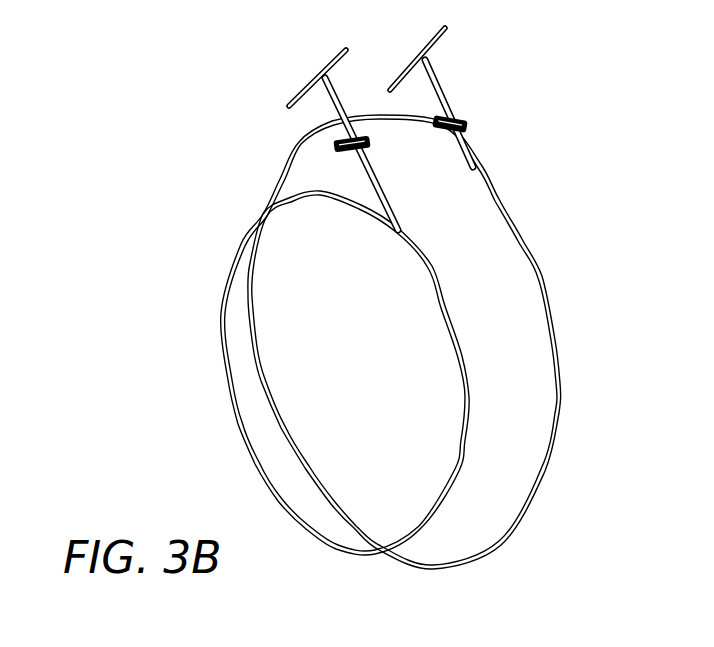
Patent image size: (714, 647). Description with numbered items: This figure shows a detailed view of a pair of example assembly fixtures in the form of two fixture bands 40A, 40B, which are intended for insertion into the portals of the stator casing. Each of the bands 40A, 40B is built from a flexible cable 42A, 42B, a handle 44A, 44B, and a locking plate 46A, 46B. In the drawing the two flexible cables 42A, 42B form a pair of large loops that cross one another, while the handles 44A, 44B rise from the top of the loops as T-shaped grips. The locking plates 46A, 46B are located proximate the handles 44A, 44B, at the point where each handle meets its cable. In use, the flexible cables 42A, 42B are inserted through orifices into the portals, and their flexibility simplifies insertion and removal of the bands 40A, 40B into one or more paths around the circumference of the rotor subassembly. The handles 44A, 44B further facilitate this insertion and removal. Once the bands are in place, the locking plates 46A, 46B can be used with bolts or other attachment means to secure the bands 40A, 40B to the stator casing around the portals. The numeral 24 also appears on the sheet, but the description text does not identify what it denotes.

The loop assembly 24 is at (334, 284).
The band 40A is at (285, 82).
The band 40B is at (455, 80).
The flexible cable 42A is at (437, 291).
The flexible cable 42B is at (537, 263).
The handle 44A is at (323, 101).
The handle 44B is at (433, 90).
The locking plate 46A is at (367, 139).
The locking plate 46B is at (470, 123).